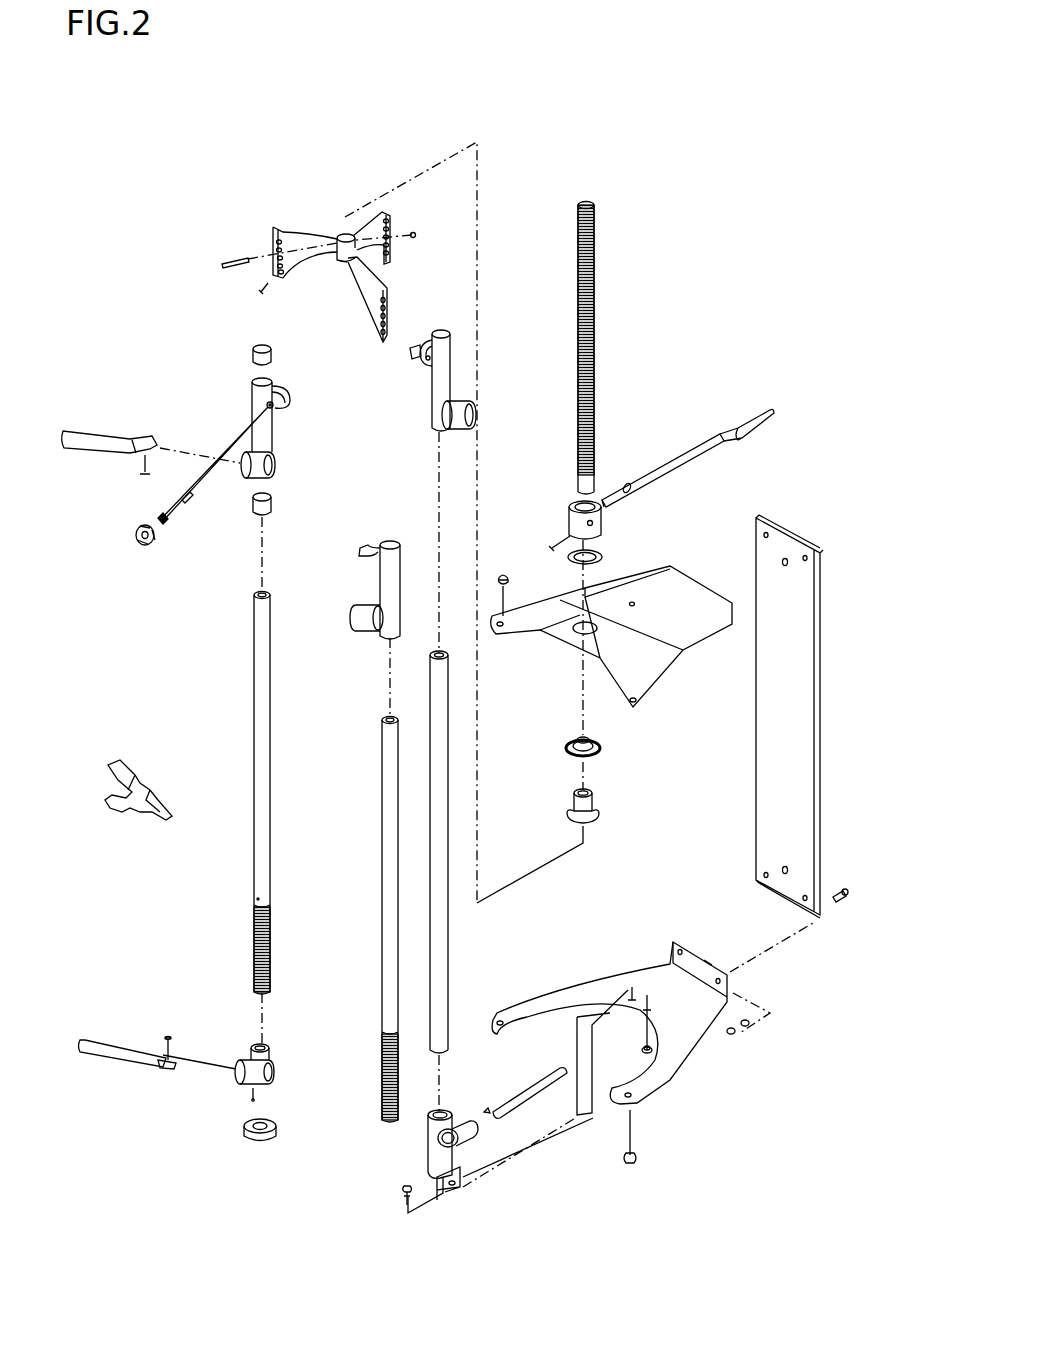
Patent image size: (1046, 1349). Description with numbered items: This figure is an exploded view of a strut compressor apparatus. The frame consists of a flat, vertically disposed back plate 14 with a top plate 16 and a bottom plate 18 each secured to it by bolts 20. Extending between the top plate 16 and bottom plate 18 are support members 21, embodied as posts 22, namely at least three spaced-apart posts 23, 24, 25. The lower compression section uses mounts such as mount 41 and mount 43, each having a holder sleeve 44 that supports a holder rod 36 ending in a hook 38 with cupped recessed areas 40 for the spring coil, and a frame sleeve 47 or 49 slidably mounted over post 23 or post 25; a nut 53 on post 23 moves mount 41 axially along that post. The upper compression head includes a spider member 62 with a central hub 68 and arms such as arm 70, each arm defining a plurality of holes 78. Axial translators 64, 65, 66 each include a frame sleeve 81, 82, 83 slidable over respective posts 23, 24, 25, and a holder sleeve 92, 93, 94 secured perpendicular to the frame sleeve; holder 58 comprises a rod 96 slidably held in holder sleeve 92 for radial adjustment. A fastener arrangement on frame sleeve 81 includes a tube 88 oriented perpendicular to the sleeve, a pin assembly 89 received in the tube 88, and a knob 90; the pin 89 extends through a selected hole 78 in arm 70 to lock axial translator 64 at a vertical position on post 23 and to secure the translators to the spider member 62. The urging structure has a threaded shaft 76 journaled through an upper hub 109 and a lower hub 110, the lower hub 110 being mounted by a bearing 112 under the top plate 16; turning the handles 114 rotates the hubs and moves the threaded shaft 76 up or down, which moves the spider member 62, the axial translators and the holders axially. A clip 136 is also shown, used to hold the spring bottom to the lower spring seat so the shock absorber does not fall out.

The back plate 14 is at (808, 630).
The top plate 16 is at (667, 580).
The bottom plate 18 is at (670, 1083).
The bolts 20 is at (847, 889).
The support members 21 is at (229, 793).
The posts 22 is at (391, 886).
The post 23 is at (254, 748).
The post 24 is at (385, 843).
The post 25 is at (447, 985).
The rod 36 is at (92, 1038).
The hook 38 is at (167, 1069).
The cupped recessed areas 40 is at (174, 1055).
The mount 41 is at (261, 1073).
The mount 43 is at (489, 1140).
The holder sleeve 44 is at (258, 1077).
The frame sleeve 47 is at (268, 1057).
The frame sleeve 49 is at (448, 1157).
The nut 53 is at (261, 1144).
The holder 58 is at (193, 453).
The spider member 62 is at (325, 216).
The axial translator 64 is at (273, 425).
The axial translator 65 is at (380, 603).
The axial translator 66 is at (443, 383).
The central hub 68 is at (344, 262).
The arm 70 is at (296, 258).
The threaded shaft 76 is at (595, 310).
The holes 78 is at (280, 238).
The frame sleeve 81 is at (257, 429).
The frame sleeve 82 is at (398, 586).
The frame sleeve 83 is at (430, 387).
The tube 88 is at (278, 408).
The pin assembly 89 is at (197, 508).
The knob 90 is at (148, 545).
The holder sleeve 92 is at (244, 473).
The holder sleeve 93 is at (358, 630).
The holder sleeve 94 is at (458, 426).
The rod 96 is at (80, 430).
The upper hub 109 is at (601, 517).
The lower hub 110 is at (594, 805).
The bearing 112 is at (600, 745).
The handles 114 is at (678, 457).
The clip 136 is at (140, 815).